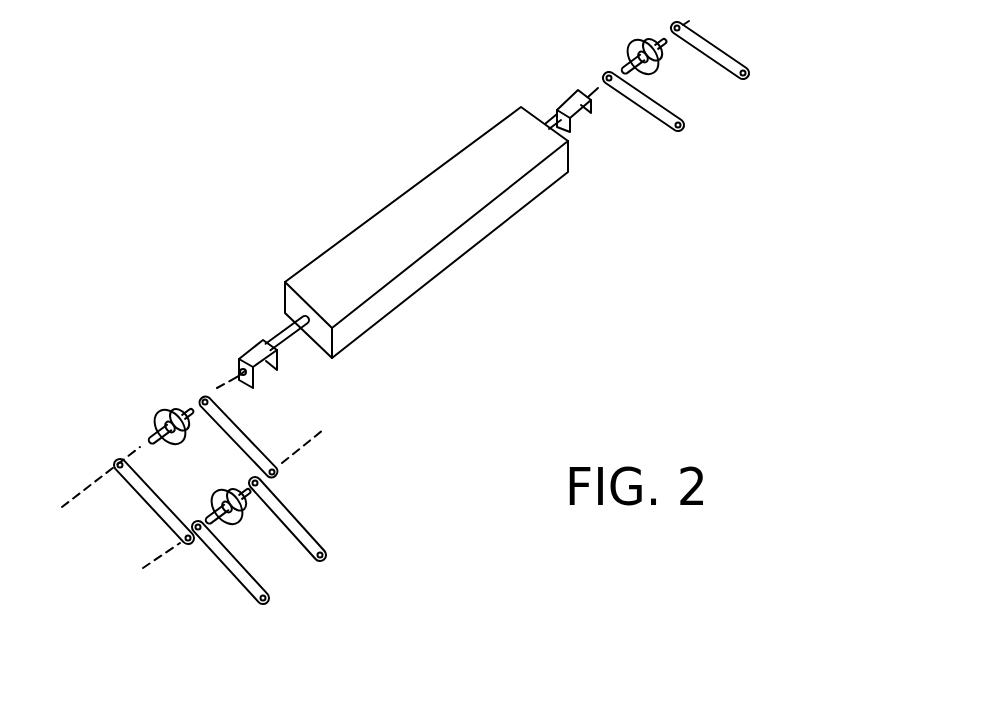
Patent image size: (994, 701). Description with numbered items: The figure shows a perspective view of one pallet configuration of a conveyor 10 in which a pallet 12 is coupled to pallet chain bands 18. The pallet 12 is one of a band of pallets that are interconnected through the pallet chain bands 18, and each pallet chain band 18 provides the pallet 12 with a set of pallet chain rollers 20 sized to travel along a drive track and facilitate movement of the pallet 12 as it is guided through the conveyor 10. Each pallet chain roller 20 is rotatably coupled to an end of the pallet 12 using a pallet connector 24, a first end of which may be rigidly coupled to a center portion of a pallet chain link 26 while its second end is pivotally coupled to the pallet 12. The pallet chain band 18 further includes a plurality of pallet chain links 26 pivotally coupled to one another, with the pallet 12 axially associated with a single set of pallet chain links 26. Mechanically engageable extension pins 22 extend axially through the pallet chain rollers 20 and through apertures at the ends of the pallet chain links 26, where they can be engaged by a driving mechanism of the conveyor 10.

The conveyor 10 is at (229, 128).
The pallet 12 is at (398, 227).
The pallet chain band 18 is at (658, 170).
The pallet chain roller 20 is at (640, 43).
The extension pin 22 is at (627, 53).
The pallet connector 24 is at (255, 358).
The pallet chain link 26 is at (663, 107).